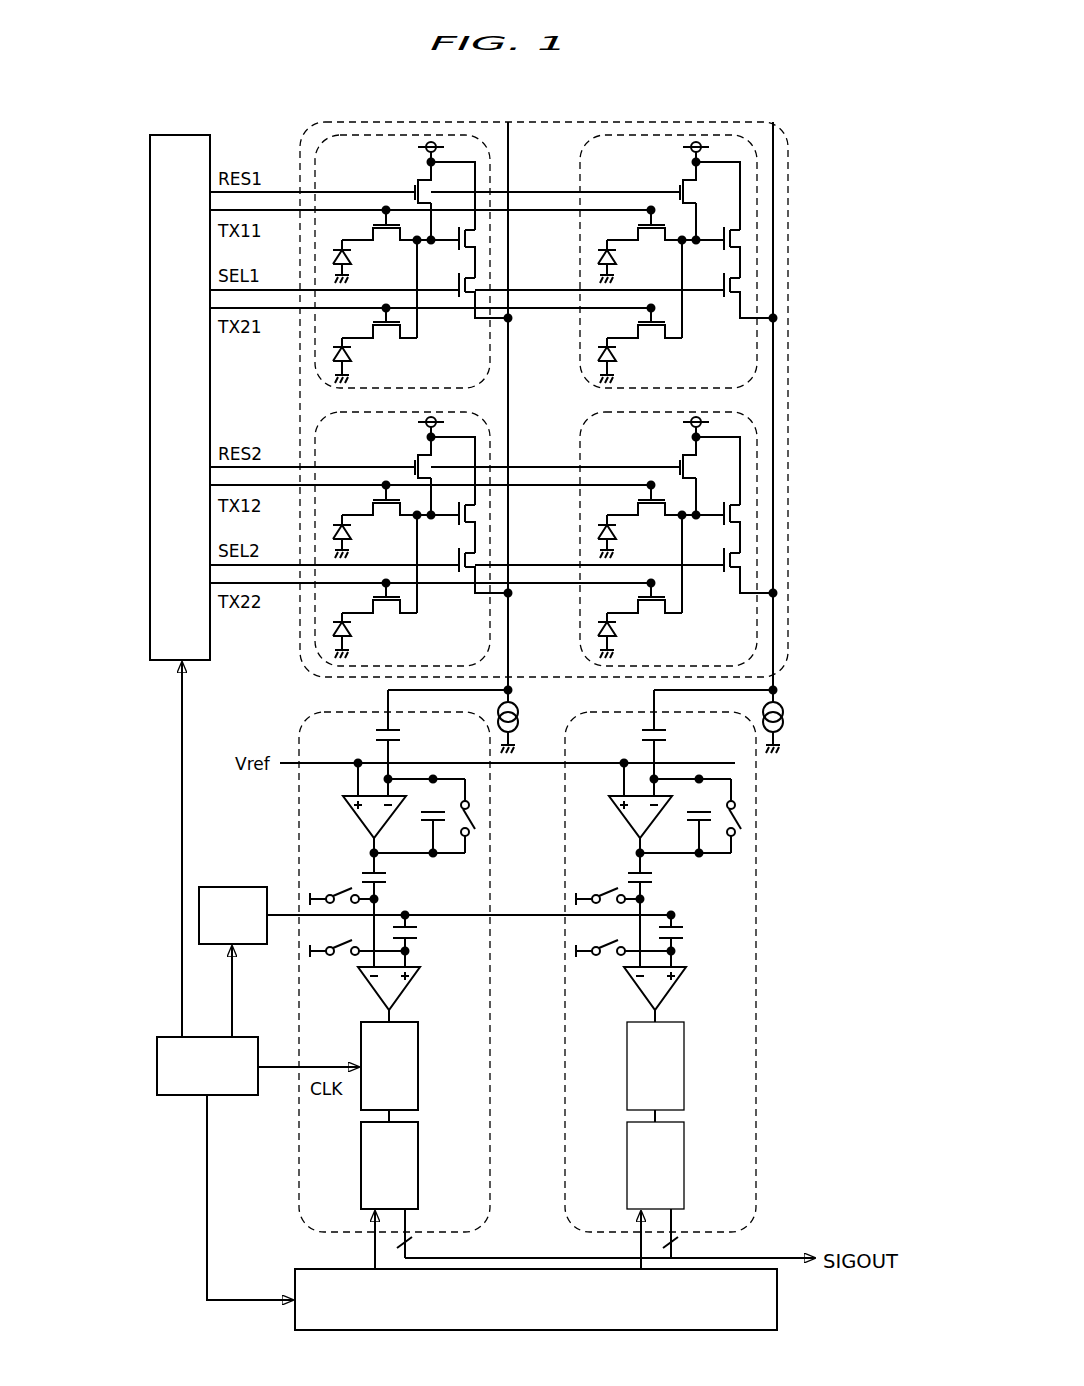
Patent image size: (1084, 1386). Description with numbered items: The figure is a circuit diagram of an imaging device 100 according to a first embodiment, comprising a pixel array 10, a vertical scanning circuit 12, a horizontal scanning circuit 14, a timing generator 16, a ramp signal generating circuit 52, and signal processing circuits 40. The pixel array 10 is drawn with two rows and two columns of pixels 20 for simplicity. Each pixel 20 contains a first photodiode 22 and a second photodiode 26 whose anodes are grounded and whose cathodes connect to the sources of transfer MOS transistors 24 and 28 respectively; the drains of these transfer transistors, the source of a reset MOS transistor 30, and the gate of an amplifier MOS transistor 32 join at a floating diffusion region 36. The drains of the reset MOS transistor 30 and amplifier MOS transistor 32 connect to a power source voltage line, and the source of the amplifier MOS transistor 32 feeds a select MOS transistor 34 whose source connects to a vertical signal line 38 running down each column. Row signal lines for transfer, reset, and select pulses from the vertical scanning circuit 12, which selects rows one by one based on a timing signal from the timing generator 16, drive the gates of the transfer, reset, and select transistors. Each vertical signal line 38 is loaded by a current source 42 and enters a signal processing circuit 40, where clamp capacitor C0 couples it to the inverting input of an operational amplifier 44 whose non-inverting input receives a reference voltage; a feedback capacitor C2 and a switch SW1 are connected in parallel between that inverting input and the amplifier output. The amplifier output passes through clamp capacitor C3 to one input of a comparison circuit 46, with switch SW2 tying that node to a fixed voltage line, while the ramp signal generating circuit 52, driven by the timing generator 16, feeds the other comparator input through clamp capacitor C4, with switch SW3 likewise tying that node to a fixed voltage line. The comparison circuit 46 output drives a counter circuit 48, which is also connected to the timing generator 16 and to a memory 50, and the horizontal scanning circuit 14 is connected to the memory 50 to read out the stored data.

The imaging device 100 is at (581, 89).
The pixel array 10 is at (788, 350).
The vertical scanning circuit 12 is at (180, 135).
The horizontal scanning circuit 14 is at (777, 1297).
The timing generator 16 is at (157, 1067).
The pixel 20 is at (405, 135).
The photodiode 22 is at (350, 255).
The transfer MOS transistor 24 is at (378, 222).
The photodiode 26 is at (350, 353).
The transfer MOS transistor 28 is at (390, 332).
The reset MOS transistor 30 is at (417, 185).
The amplifier MOS transistor 32 is at (473, 240).
The select MOS transistor 34 is at (473, 283).
The floating diffusion region 36 is at (431, 245).
The vertical signal line 38 is at (508, 403).
The signal processing circuit 40 is at (490, 1058).
The current source 42 is at (518, 710).
The operational amplifier 44 is at (343, 818).
The comparison circuit 46 is at (413, 984).
The counter circuit 48 is at (418, 1065).
The memory 50 is at (418, 1167).
The ramp signal generating circuit 52 is at (232, 887).
The clamp capacitor C0 is at (402, 735).
The feedback capacitor C2 is at (442, 826).
The clamp capacitor C3 is at (389, 877).
The clamp capacitor C4 is at (418, 933).
The switch SW1 is at (474, 815).
The switch SW2 is at (341, 891).
The switch SW3 is at (341, 957).